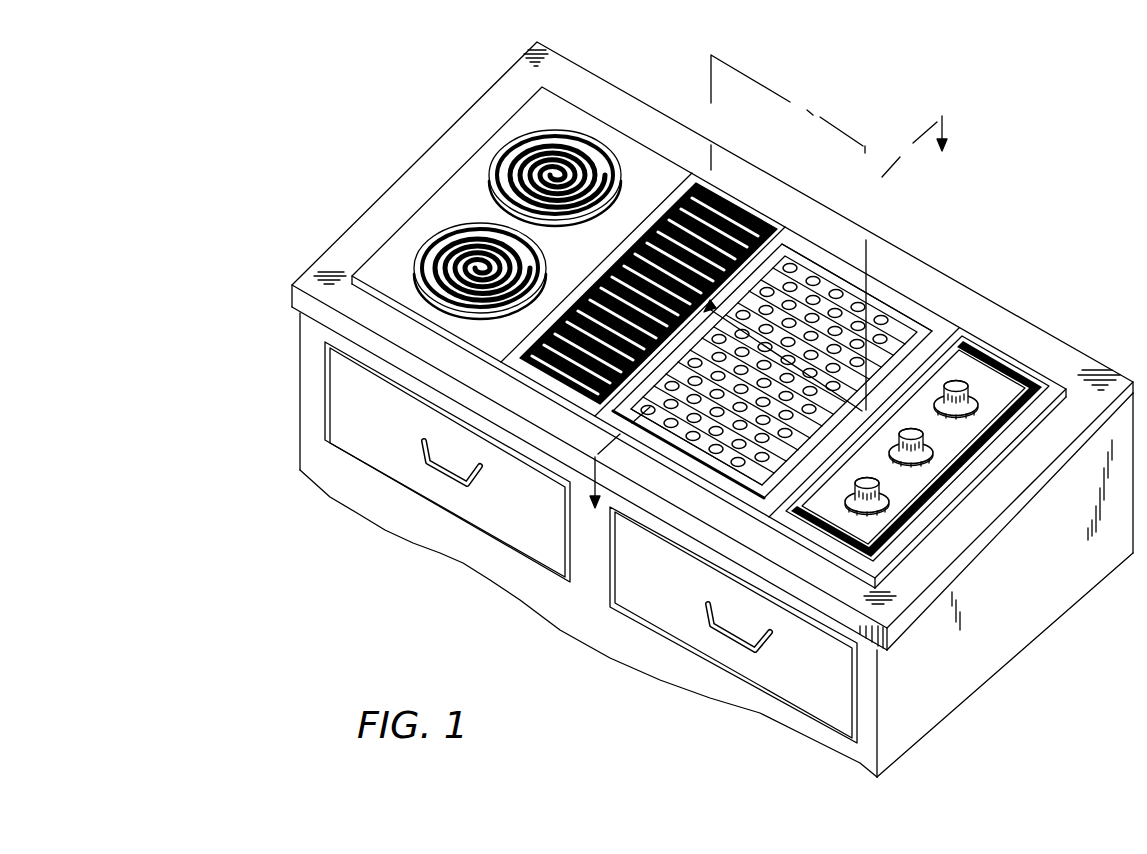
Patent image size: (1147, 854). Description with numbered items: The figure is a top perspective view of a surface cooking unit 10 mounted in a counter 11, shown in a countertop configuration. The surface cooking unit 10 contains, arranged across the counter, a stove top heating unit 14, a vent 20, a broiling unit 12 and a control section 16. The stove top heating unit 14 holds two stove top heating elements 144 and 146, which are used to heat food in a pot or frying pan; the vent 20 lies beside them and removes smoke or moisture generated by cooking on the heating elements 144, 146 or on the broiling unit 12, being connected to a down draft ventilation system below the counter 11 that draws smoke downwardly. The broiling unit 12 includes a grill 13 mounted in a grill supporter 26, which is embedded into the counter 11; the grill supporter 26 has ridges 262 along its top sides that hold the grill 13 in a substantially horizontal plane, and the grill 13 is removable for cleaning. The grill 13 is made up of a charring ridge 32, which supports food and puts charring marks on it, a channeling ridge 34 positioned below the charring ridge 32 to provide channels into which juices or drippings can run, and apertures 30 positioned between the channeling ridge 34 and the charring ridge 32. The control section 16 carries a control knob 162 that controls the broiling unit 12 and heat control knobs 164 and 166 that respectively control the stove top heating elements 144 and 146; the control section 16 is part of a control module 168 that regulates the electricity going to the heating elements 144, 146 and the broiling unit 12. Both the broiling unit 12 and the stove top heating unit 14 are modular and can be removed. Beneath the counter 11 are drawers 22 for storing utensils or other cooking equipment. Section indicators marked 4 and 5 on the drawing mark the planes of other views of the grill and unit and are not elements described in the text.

The surface cooking unit 10 is at (867, 262).
The counter 11 is at (693, 143).
The broiling unit 12 is at (796, 337).
The grill 13 is at (807, 257).
The stove top heating unit 14 is at (543, 203).
The control section 16 is at (964, 406).
The vent 20 is at (727, 196).
The drawers 22 is at (343, 388).
The grill supporter 26 is at (678, 458).
The apertures 30 is at (845, 246).
The charring ridge 32 is at (936, 345).
The channeling ridge 34 is at (668, 421).
The stove top heating element 144 is at (566, 222).
The stove top heating element 146 is at (493, 312).
The control knob 162 is at (973, 397).
The heat control knob 164 is at (937, 445).
The heat control knob 166 is at (890, 493).
The control module 168 is at (1000, 374).
The ridges 262 is at (788, 238).
The section line 4- 4 is at (783, 334).
The section line 5- 5 is at (768, 324).